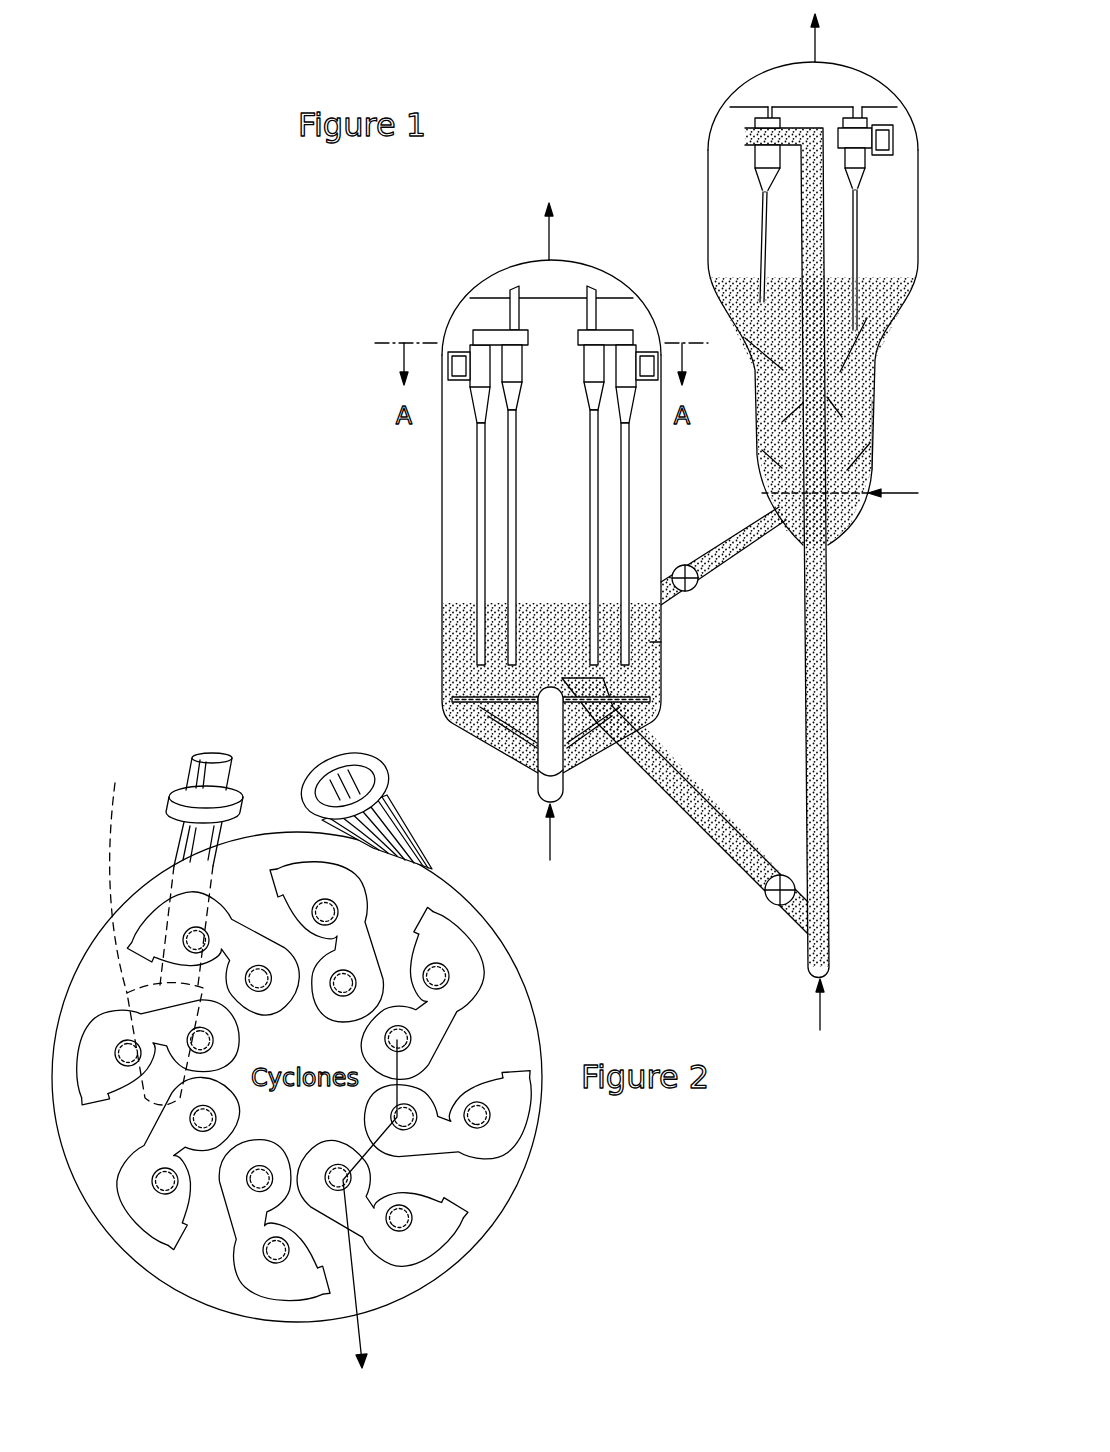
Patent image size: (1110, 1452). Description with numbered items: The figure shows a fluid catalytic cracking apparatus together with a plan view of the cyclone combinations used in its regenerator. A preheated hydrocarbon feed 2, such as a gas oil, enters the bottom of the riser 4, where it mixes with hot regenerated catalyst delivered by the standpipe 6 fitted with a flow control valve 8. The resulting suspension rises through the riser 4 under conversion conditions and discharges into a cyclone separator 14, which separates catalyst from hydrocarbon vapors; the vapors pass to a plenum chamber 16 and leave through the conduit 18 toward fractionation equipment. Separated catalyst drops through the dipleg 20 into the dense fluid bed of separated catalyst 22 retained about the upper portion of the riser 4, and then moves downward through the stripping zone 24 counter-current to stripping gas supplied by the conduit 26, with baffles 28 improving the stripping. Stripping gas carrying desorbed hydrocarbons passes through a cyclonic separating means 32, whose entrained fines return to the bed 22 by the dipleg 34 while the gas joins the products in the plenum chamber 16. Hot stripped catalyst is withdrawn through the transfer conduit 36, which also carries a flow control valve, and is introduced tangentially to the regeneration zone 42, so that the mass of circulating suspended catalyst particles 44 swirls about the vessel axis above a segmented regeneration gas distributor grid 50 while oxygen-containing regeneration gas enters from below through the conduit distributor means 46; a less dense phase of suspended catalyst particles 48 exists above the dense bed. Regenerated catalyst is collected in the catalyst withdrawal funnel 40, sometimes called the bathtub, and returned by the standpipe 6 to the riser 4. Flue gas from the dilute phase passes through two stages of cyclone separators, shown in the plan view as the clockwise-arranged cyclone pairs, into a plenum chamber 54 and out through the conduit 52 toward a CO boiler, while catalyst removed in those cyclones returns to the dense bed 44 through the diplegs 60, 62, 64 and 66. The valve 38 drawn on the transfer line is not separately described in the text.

In FIG. 1, the hydrocarbon feed 2 is at (822, 1012).
In FIG. 1, the riser 4 is at (829, 883).
In FIG. 1, the standpipe 6 is at (740, 828).
In FIG. 2, the standpipe 6 is at (213, 753).
In FIG. 1, the flow control valve 8 is at (772, 907).
In FIG. 1, the cyclone separator 14 is at (745, 137).
In FIG. 1, the plenum chamber 16 is at (858, 90).
In FIG. 1, the conduit 18 is at (815, 40).
In FIG. 1, the dipleg 20 is at (765, 228).
In FIG. 1, the dense fluid bed of separated catalyst 22 is at (843, 300).
In FIG. 1, the stripping zone 24 is at (877, 425).
In FIG. 1, the conduit 26 is at (907, 500).
In FIG. 1, the baffles 28 is at (892, 462).
In FIG. 1, the cyclonic separating means 32 is at (863, 133).
In FIG. 1, the dipleg 34 is at (860, 230).
In FIG. 1, the conduit 36 is at (730, 560).
In FIG. 2, the conduit 36 is at (345, 752).
In FIG. 1, the slide valve 38 is at (685, 565).
In FIG. 1, the catalyst withdrawal funnel 40 is at (661, 642).
In FIG. 2, the catalyst withdrawal funnel 40 is at (130, 892).
In FIG. 1, the regeneration zone 42 is at (442, 573).
In FIG. 1, the mass of circulating suspended catalyst particles 44 is at (551, 688).
In FIG. 1, the conduit distributor means 46 is at (558, 832).
In FIG. 1, the less dense phase of suspended catalyst particles 48 is at (566, 574).
In FIG. 1, the segmented regeneration gas distributor grid 50 is at (517, 730).
In FIG. 1, the conduit 52 is at (548, 233).
In FIG. 2, the conduit 52 is at (357, 1338).
In FIG. 1, the plenum chamber 54 is at (508, 278).
In FIG. 1, the dipleg 60 is at (472, 467).
In FIG. 1, the dipleg 62 is at (520, 462).
In FIG. 1, the dipleg 64 is at (588, 508).
In FIG. 1, the dipleg 66 is at (638, 463).